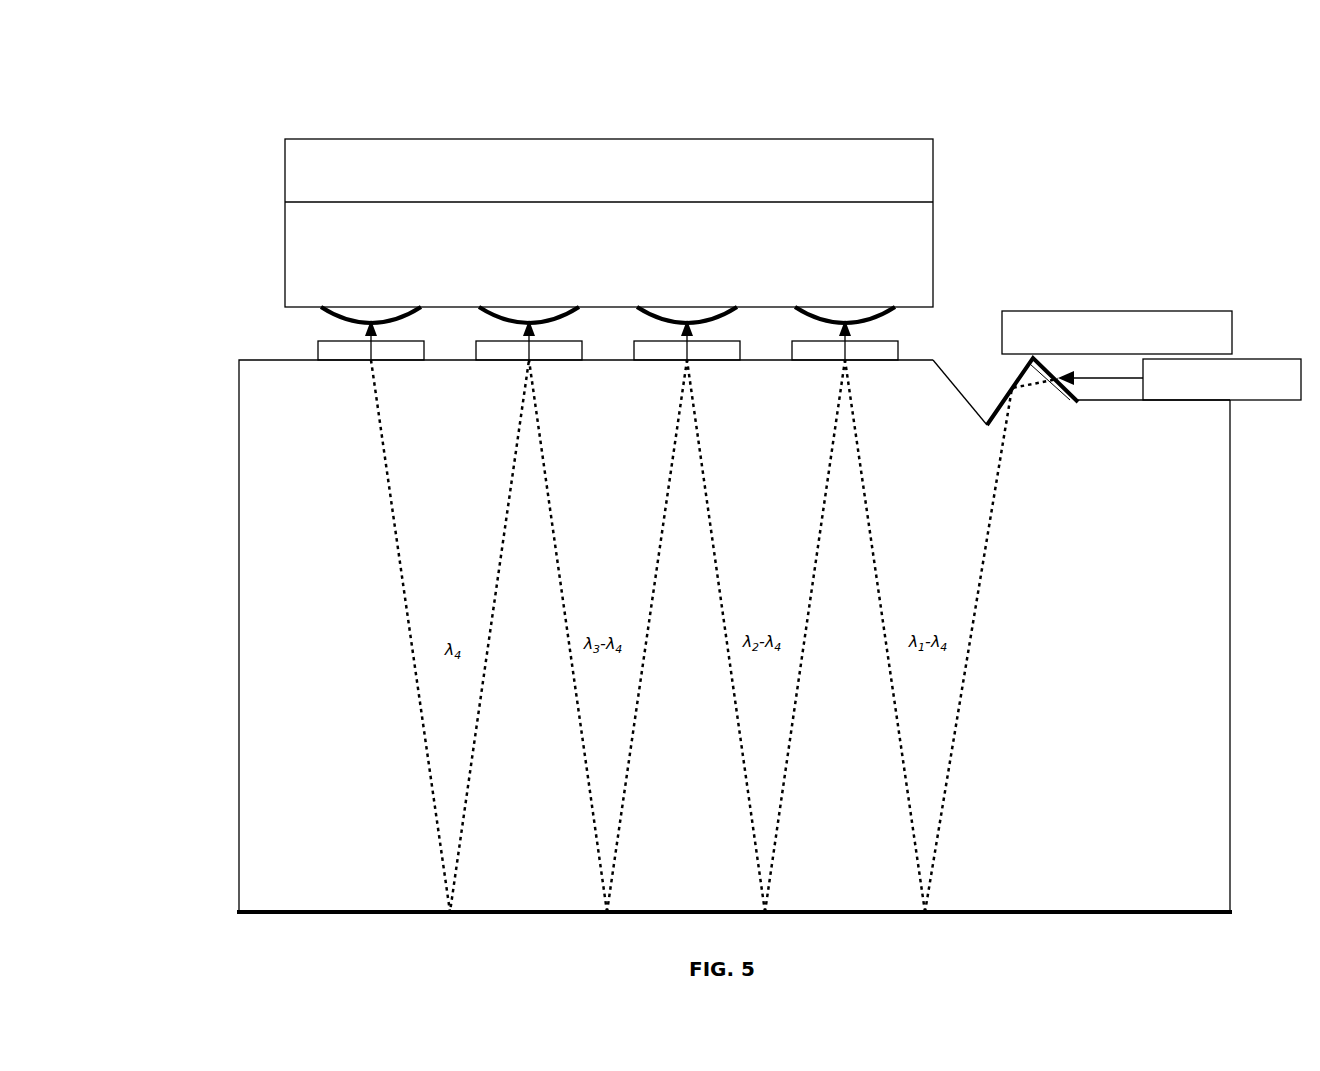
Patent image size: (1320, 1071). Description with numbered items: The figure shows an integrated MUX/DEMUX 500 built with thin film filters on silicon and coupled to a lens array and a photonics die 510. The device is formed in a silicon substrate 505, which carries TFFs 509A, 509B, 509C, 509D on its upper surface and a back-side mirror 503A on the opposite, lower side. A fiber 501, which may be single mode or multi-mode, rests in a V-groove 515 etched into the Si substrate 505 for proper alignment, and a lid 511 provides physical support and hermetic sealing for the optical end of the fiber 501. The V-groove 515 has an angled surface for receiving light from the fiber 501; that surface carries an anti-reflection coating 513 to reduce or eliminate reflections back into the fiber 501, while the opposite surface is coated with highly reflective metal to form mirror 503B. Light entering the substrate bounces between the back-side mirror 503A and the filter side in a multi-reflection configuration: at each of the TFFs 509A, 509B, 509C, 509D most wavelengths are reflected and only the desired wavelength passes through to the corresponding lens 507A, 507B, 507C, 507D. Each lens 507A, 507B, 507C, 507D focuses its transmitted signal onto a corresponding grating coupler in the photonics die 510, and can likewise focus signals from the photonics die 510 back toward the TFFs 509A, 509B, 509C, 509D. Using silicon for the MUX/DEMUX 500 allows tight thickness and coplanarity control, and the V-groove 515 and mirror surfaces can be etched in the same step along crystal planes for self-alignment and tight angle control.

The MUX/DEMUX 500 is at (186, 111).
The photonics die 510 is at (609, 223).
The lens 507A is at (877, 306).
The lens 507B is at (720, 306).
The lens 507C is at (490, 306).
The lens 507D is at (333, 306).
The thin film filter 509A is at (881, 361).
The thin film filter 509B is at (726, 361).
The thin film filter 509C is at (568, 361).
The thin film filter 509D is at (408, 361).
The silicon substrate 505 is at (734, 636).
The back-side mirror 503A is at (1144, 908).
The mirror 503B is at (1018, 387).
The V-groove 515 is at (1100, 397).
The anti-reflection coating 513 is at (1057, 392).
The lid 511 is at (1117, 332).
The fiber 501 is at (1179, 379).